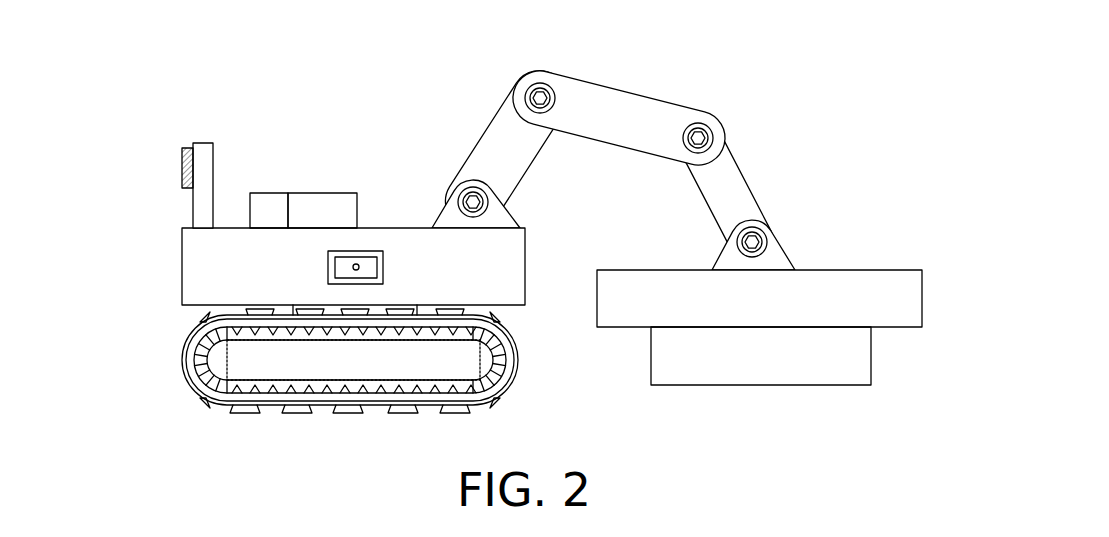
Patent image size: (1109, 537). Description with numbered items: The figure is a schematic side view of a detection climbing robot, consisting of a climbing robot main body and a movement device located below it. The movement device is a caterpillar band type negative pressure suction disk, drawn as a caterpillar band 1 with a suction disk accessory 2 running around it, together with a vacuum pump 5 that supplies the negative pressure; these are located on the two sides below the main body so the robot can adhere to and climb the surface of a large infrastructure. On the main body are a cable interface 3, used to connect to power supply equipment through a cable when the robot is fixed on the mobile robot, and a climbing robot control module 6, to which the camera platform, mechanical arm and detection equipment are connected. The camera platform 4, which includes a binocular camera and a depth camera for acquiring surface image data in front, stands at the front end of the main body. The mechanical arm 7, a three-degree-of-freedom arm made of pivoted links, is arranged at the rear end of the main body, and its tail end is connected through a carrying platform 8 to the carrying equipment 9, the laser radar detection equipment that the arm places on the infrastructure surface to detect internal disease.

The caterpillar band 1 is at (183, 378).
The suction disk accessory 2 is at (178, 343).
The cable interface 3 is at (328, 265).
The camera platform 4 is at (182, 187).
The vacuum pump 5 is at (271, 193).
The climbing robot control module 6 is at (323, 193).
The mechanical arm 7 is at (622, 92).
The carrying platform 8 is at (922, 298).
The carrying equipment 9 is at (871, 355).